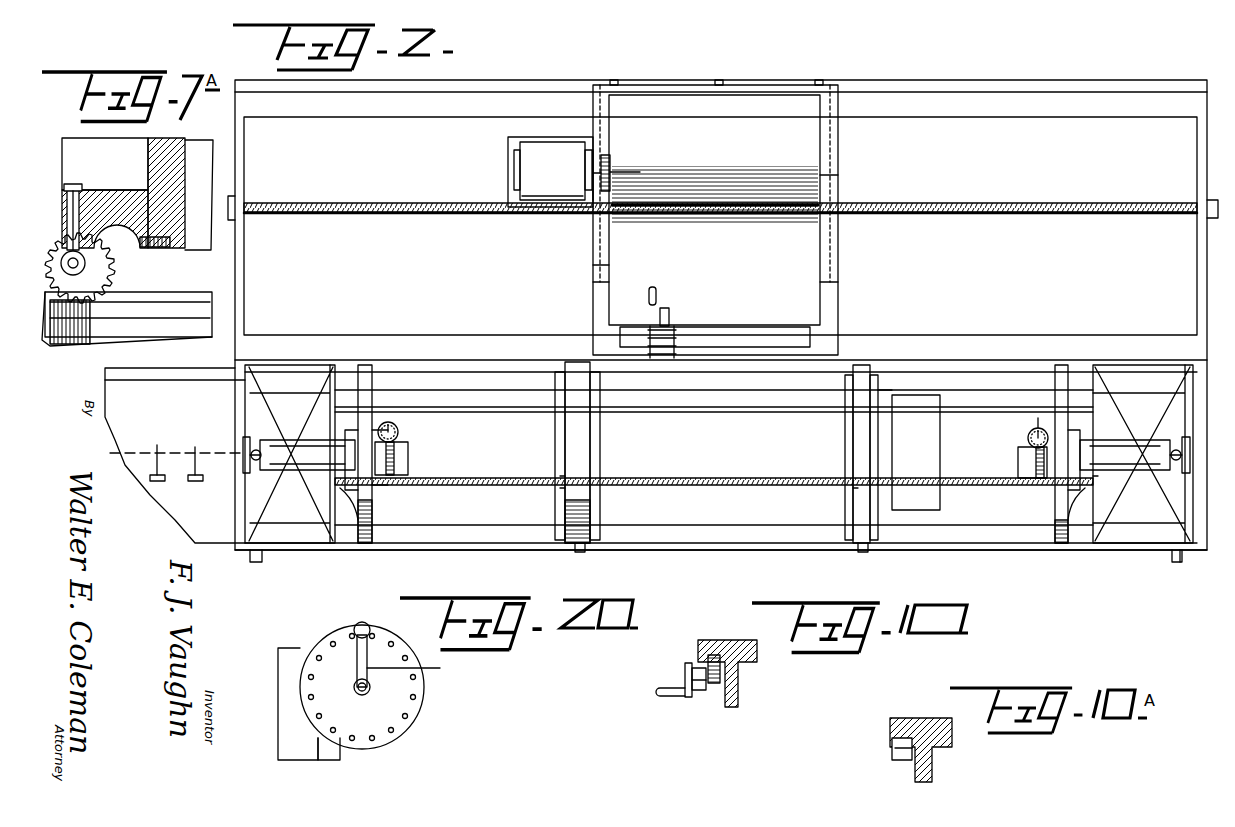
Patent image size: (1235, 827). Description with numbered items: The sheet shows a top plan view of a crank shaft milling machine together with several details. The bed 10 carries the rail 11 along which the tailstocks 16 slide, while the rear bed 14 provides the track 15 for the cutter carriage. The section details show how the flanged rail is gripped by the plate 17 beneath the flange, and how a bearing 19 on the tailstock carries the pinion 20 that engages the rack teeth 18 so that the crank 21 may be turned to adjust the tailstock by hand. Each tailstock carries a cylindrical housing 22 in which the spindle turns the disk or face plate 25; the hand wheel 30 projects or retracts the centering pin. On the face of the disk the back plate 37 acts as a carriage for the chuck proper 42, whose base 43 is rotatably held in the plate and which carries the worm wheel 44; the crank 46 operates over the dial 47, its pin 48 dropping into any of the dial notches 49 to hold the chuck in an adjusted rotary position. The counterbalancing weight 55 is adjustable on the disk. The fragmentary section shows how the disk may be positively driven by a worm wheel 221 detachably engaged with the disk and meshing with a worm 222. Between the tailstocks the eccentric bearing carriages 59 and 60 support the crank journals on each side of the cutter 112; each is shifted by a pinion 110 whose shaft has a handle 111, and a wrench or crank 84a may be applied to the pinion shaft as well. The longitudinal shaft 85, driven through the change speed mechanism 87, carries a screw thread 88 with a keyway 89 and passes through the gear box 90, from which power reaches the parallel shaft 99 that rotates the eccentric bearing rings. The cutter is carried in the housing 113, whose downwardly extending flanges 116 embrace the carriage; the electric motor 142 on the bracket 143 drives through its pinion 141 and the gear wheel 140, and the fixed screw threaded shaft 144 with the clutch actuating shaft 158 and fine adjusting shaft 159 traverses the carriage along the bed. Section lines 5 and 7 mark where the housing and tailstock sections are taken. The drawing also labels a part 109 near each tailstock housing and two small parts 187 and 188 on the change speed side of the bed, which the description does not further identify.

In FIG. 2, the section line 5 is at (563, 214).
In FIG. 2, the section line 7 is at (115, 455).
In FIG. 2, the bed 10 is at (682, 514).
In FIG. 2, the rail 11 is at (735, 551).
In FIG. 19, the rail 11 is at (740, 692).
In FIG. 19A, the rail 11 is at (934, 770).
In FIG. 2, the bed 14 is at (934, 368).
In FIG. 2, the track 15 is at (468, 84).
In FIG. 2, the tailstock 16 is at (719, 454).
In FIG. 19A, the plate 17 is at (900, 760).
In FIG. 19, the rack teeth 18 is at (715, 650).
In FIG. 19A, the rack teeth 18 is at (905, 735).
In FIG. 2, the bearing 19 is at (1181, 563).
In FIG. 19, the bearing 19 is at (700, 692).
In FIG. 19, the pinion 20 is at (714, 685).
In FIG. 2, the crank 21 is at (258, 563).
In FIG. 19, the crank 21 is at (686, 678).
In FIG. 2, the cylindrical housing 22 is at (720, 455).
In FIG. 7A, the disk or face plate 25 is at (170, 250).
In FIG. 2, the disk or face plate 25 is at (366, 362).
In FIG. 2, the hand wheel 30 is at (244, 465).
In FIG. 2, the back plate 37 is at (1046, 430).
In FIG. 20, the back plate 37 is at (296, 656).
In FIG. 2, the chuck proper 42 is at (408, 478).
In FIG. 20, the flange or base portion 43 is at (330, 762).
In FIG. 2, the worm wheel 44 is at (390, 477).
In FIG. 20, the crank 46 is at (410, 665).
In FIG. 2, the dial 47 is at (399, 433).
In FIG. 20, the dial 47 is at (405, 717).
In FIG. 20, the pin 48 is at (366, 622).
In FIG. 20, the dial notches 49 is at (412, 650).
In FIG. 7A, the weight 55 is at (203, 152).
In FIG. 2, the weight 55 is at (348, 482).
In FIG. 2, the carriage 59 is at (868, 452).
In FIG. 2, the carriage 60 is at (588, 455).
In FIG. 2, the wrench or crank 84a is at (572, 553).
In FIG. 2, the shaft 85 is at (672, 480).
In FIG. 2, the change speed mechanism 87 is at (173, 390).
In FIG. 2, the screw thread 88 is at (740, 487).
In FIG. 2, the keyway 89 is at (942, 436).
In FIG. 2, the gear box 90 is at (916, 452).
In FIG. 7A, the shaft 99 is at (122, 330).
In FIG. 2, the shaft 99 is at (757, 414).
In FIG. 2, the clip 109 is at (338, 492).
In FIG. 2, the pinion 110 is at (562, 478).
In FIG. 2, the handle 111 is at (560, 489).
In FIG. 2, the cutter 112 is at (678, 342).
In FIG. 2, the housing 113 is at (764, 108).
In FIG. 2, the downwardly extending flanges 116 is at (592, 268).
In FIG. 2, the gear wheel 140 is at (612, 162).
In FIG. 2, the pinion 141 is at (612, 172).
In FIG. 2, the electric motor 142 is at (548, 135).
In FIG. 2, the bracket 143 is at (506, 187).
In FIG. 2, the fixed screw threaded shaft 144 is at (1062, 204).
In FIG. 2, the clutch actuating shaft 158 is at (657, 280).
In FIG. 2, the shaft 159 is at (672, 316).
In FIG. 2, the foot 187 is at (159, 451).
In FIG. 2, the foot 188 is at (201, 452).
In FIG. 7A, the worm wheel 221 is at (82, 200).
In FIG. 7A, the worm 222 is at (86, 264).